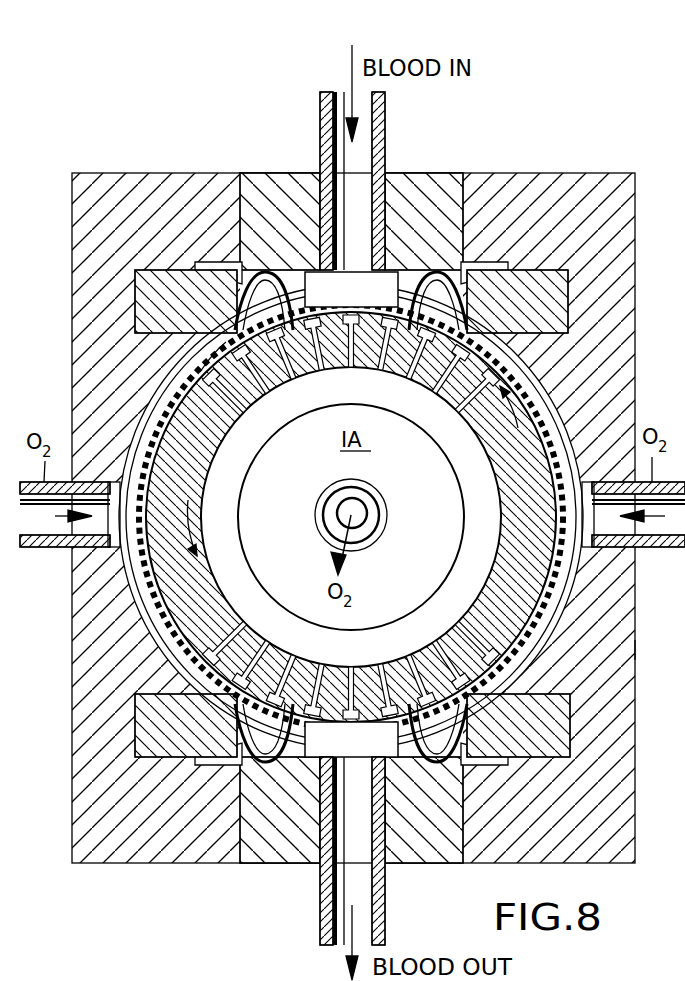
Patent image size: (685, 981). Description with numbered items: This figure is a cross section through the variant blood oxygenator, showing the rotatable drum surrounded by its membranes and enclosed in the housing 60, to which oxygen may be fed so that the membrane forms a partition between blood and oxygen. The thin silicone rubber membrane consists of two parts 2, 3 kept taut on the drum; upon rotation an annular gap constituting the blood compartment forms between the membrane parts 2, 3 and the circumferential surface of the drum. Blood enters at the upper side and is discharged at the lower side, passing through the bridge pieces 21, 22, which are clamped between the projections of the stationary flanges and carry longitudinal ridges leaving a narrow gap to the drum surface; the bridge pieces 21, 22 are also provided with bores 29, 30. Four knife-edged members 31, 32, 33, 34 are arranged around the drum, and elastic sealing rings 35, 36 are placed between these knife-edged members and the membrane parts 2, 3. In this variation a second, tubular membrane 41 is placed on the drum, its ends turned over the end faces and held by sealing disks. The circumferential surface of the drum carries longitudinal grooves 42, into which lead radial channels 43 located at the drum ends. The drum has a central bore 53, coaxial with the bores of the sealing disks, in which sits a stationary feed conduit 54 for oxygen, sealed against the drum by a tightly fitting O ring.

The housing 60 is at (178, 173).
The bridge piece 22 is at (296, 170).
The bore 30 is at (385, 210).
The bridge piece 21 is at (290, 869).
The bore 29 is at (416, 863).
The knife-edged member 32 is at (135, 288).
The knife-edged member 34 is at (560, 318).
The knife-edged member 31 is at (140, 723).
The knife-edged member 33 is at (555, 725).
The elastic sealing ring 36 is at (658, 650).
The membrane part 2 is at (152, 600).
The membrane part 3 is at (556, 592).
The elastic sealing ring 35 is at (150, 408).
The second tubular membrane 41 is at (556, 560).
The longitudinal groove 42 is at (383, 310).
The radial channel 43 is at (382, 371).
The central bore 53 is at (325, 506).
The stationary feed conduit 54 is at (378, 506).